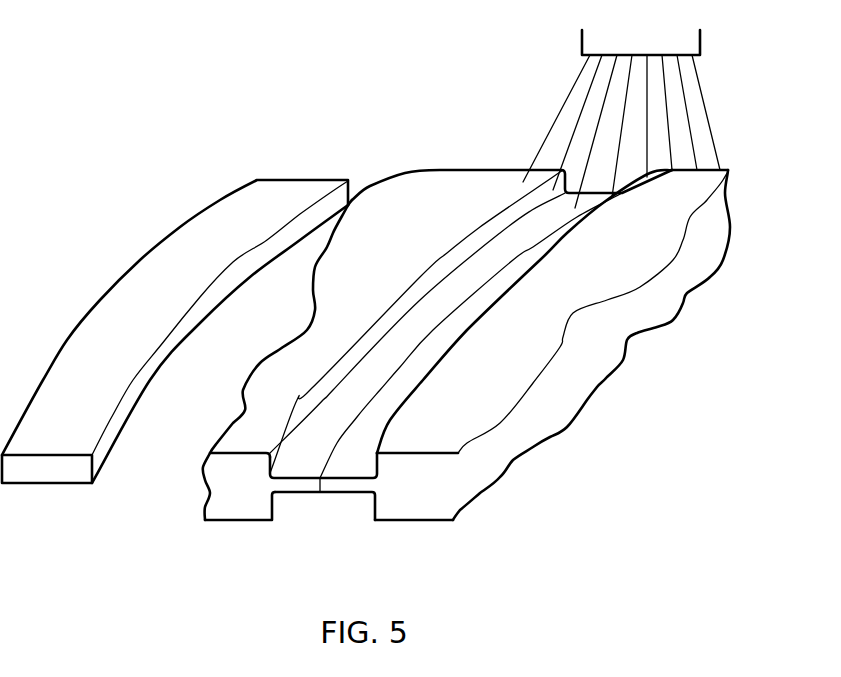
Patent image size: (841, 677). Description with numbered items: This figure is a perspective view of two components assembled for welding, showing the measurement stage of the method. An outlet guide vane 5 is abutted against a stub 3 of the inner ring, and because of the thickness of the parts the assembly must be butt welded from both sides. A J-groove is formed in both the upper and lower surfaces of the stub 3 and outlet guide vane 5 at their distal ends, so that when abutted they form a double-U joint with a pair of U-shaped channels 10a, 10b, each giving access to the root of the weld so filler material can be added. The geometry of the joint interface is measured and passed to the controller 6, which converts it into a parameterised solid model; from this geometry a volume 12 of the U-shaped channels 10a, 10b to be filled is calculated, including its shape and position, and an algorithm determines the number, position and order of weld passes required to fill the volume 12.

The volume 12 is at (145, 310).
The stub 3 is at (353, 300).
The outlet guide vane 5 is at (587, 293).
The controller 6 is at (656, 40).
The U-shaped channel 10a is at (326, 441).
The U-shaped channel 10b is at (318, 502).